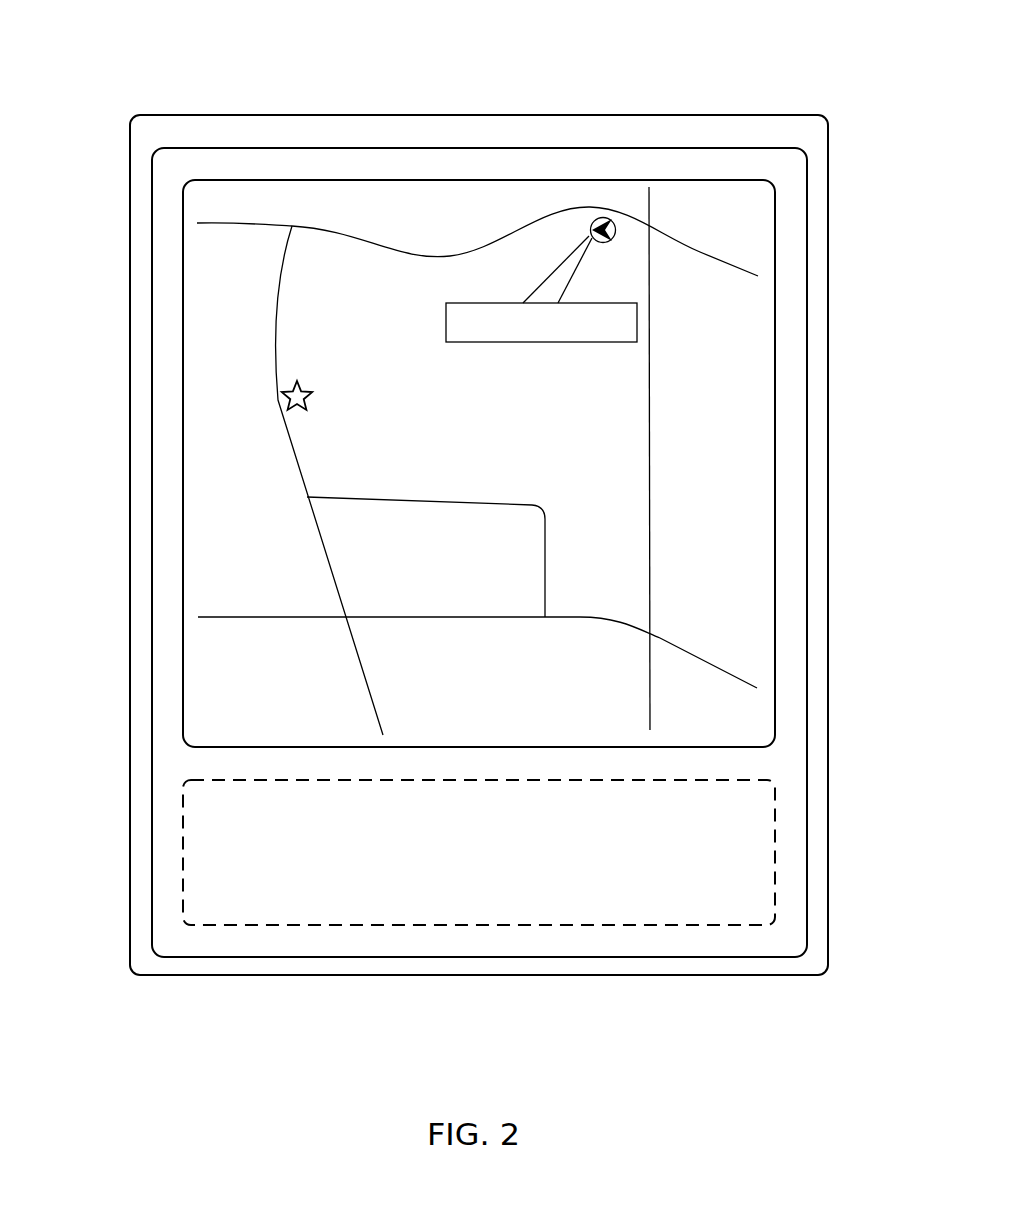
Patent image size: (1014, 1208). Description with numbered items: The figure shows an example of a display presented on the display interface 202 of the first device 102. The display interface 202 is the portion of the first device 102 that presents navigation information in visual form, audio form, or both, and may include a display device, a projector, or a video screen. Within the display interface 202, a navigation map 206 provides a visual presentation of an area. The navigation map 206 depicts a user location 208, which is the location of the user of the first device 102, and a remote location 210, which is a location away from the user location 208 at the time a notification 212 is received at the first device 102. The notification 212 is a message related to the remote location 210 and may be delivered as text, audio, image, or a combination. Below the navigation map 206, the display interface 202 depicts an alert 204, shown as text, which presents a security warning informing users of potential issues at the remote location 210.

The first device 102 is at (124, 58).
The display interface 202 is at (807, 1000).
The alert 204 is at (840, 779).
The navigation map 206 is at (840, 182).
The user location 208 is at (597, 221).
The remote location 210 is at (286, 393).
The notification 212 is at (628, 332).